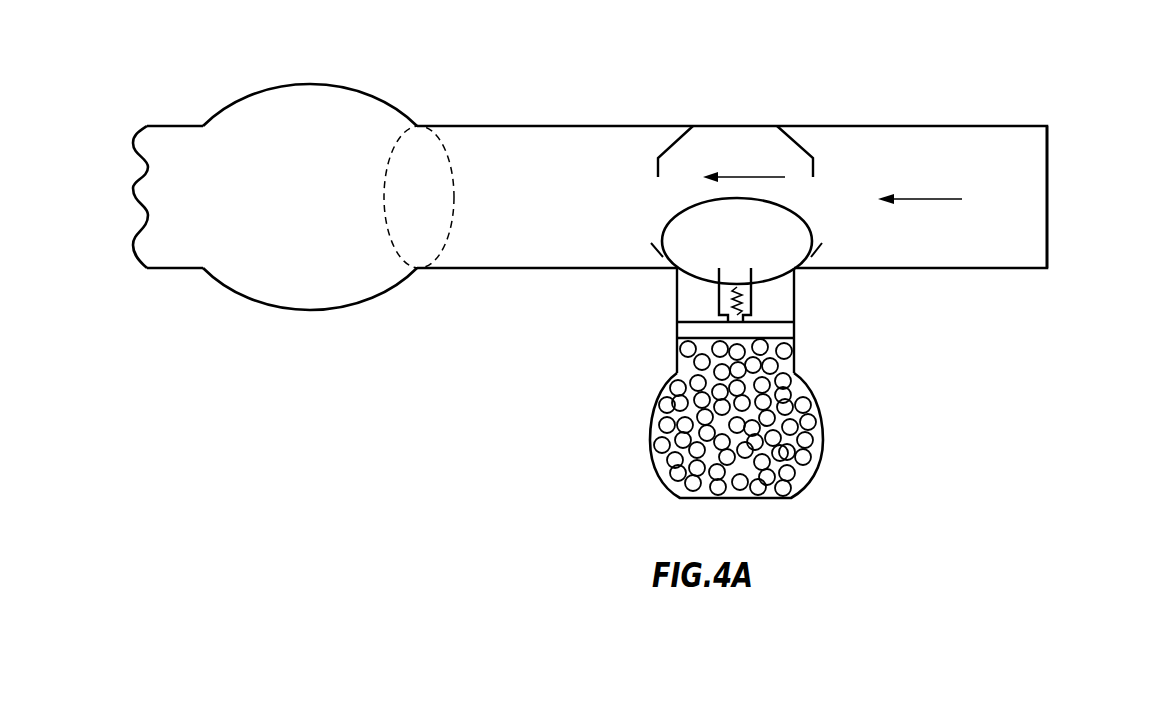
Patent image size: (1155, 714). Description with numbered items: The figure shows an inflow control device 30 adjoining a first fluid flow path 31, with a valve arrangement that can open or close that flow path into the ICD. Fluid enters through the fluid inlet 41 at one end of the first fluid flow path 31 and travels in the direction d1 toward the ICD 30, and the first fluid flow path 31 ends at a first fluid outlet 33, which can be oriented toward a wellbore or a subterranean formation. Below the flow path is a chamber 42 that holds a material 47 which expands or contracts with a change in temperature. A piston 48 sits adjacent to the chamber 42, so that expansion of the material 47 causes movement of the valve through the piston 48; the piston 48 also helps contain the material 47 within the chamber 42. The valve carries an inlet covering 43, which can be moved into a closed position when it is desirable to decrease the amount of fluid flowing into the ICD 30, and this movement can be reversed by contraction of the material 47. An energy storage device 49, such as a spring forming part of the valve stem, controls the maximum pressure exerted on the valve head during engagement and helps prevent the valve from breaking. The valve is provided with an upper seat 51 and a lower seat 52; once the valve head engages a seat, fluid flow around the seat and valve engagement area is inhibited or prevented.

The inflow control device 30 is at (353, 87).
The first fluid flow path 31 is at (568, 126).
The first fluid outlet 33 is at (170, 126).
The fluid inlet 41 is at (1047, 175).
The chamber 42 is at (810, 388).
The inlet covering 43 is at (752, 256).
The material 47 is at (670, 397).
The piston 48 is at (783, 330).
The energy storage device 49 is at (742, 291).
The upper seat 51 is at (805, 135).
The lower seat 52 is at (655, 262).
The flow direction d1 is at (937, 199).